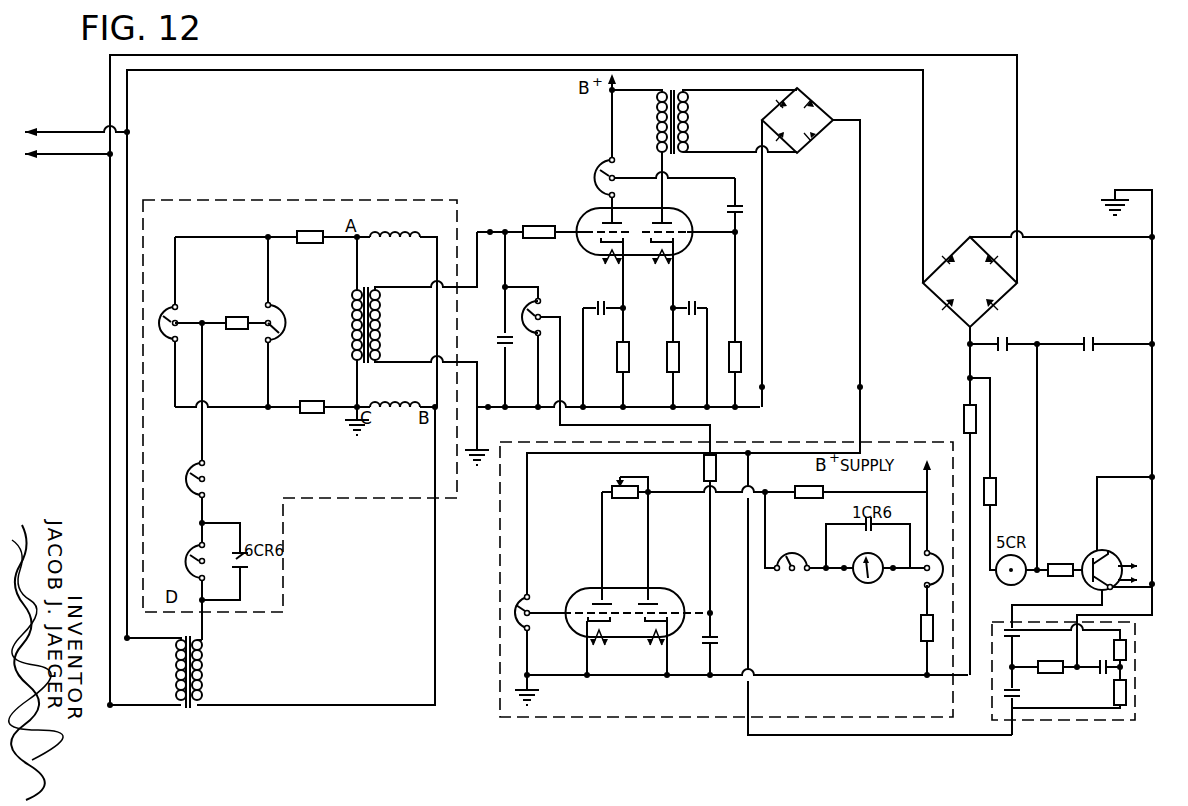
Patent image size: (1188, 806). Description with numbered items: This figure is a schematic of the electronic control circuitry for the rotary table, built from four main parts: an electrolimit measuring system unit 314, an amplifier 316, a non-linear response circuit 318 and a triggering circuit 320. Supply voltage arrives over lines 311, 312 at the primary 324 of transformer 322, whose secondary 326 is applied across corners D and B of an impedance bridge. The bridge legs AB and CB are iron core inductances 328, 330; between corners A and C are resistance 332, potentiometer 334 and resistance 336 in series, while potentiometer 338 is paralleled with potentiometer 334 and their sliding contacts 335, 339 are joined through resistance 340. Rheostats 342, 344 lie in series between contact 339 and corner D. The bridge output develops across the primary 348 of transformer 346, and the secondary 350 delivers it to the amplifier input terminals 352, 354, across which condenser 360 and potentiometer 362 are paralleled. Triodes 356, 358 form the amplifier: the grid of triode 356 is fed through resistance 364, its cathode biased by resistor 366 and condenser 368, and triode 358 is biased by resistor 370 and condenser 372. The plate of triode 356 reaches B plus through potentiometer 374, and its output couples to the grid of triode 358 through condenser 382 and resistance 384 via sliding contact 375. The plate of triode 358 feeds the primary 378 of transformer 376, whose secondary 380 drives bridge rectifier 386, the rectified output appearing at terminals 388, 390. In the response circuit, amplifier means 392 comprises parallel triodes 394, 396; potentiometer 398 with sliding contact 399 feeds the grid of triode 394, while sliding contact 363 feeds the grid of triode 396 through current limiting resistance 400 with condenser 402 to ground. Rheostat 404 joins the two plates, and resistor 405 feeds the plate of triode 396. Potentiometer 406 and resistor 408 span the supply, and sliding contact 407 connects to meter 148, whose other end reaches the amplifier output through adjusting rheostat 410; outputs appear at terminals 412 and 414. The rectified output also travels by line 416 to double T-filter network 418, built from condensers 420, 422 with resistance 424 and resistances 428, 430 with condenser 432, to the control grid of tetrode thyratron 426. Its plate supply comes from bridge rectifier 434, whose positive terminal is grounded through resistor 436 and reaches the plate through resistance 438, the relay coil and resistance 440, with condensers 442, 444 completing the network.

The line 311 is at (69, 164).
The line 312 is at (77, 120).
The electrolimit measuring system unit 314 is at (284, 200).
The amplifier 316 is at (529, 197).
The non-linear response circuit 318 is at (726, 568).
The triggering circuit 320 is at (1082, 671).
The transformer 322 is at (272, 557).
The primary 324 is at (148, 671).
The secondary 326 is at (313, 556).
The iron core inductance 328 is at (395, 223).
The iron core inductance 330 is at (395, 410).
The resistance 332 is at (312, 226).
The potentiometer 334 is at (281, 314).
The sliding contact 335 is at (268, 334).
The resistance 336 is at (311, 412).
The potentiometer 338 is at (168, 310).
The sliding contact 339 is at (178, 318).
The resistance 340 is at (236, 316).
The rheostat 342 is at (217, 494).
The rheostat 344 is at (177, 581).
The transformer 346 is at (426, 261).
The primary 348 is at (339, 322).
The secondary 350 is at (423, 348).
The input terminal 352 is at (488, 230).
The input terminal 354 is at (488, 408).
The triode 356 is at (568, 228).
The triode 358 is at (678, 214).
The condenser 360 is at (491, 330).
The potentiometer 362 is at (607, 369).
The sliding contact 363 is at (540, 304).
The resistance 364 is at (542, 238).
The cathode biasing resistor 366 is at (617, 358).
The condenser 368 is at (602, 344).
The resistor 370 is at (667, 352).
The condenser 372 is at (697, 340).
The potentiometer 374 is at (604, 166).
The sliding contact 375 is at (673, 170).
The transformer 376 is at (704, 112).
The primary 378 is at (639, 121).
The secondary 380 is at (737, 121).
The condenser 382 is at (726, 292).
The resistance 384 is at (741, 354).
The bridge rectifier 386 is at (795, 120).
The terminal 388 is at (762, 387).
The terminal 390 is at (866, 388).
The amplifier means 392 is at (618, 599).
The thermionic triode device 394 is at (558, 596).
The thermionic triode device 396 is at (676, 596).
The potentiometer 398 is at (508, 602).
The sliding contact 399 is at (530, 616).
The current limiting resistance 400 is at (704, 466).
The condenser 402 is at (725, 629).
The rheostat 404 is at (609, 532).
The resistor 405 is at (810, 496).
The potentiometer 406 is at (942, 599).
The sliding contact 407 is at (918, 578).
The resistor 408 is at (920, 638).
The adjusting rheostat 410 is at (778, 568).
The output terminal 412 is at (789, 476).
The output terminal 414 is at (942, 538).
The line 416 is at (884, 736).
The double T-filter network 418 is at (971, 697).
The condenser 420 is at (1006, 628).
The condenser 422 is at (1016, 697).
The resistance 424 is at (1044, 655).
The tetrode thyratron 426 is at (1106, 552).
The resistance 428 is at (1126, 650).
The resistance 430 is at (1126, 696).
The condenser 432 is at (1102, 676).
The bridge rectifier 434 is at (970, 279).
The resistor 436 is at (964, 420).
The resistance 438 is at (996, 486).
The resistance 440 is at (1058, 564).
The condenser 442 is at (1003, 331).
The condenser 444 is at (1094, 331).
The meter 148 is at (868, 578).